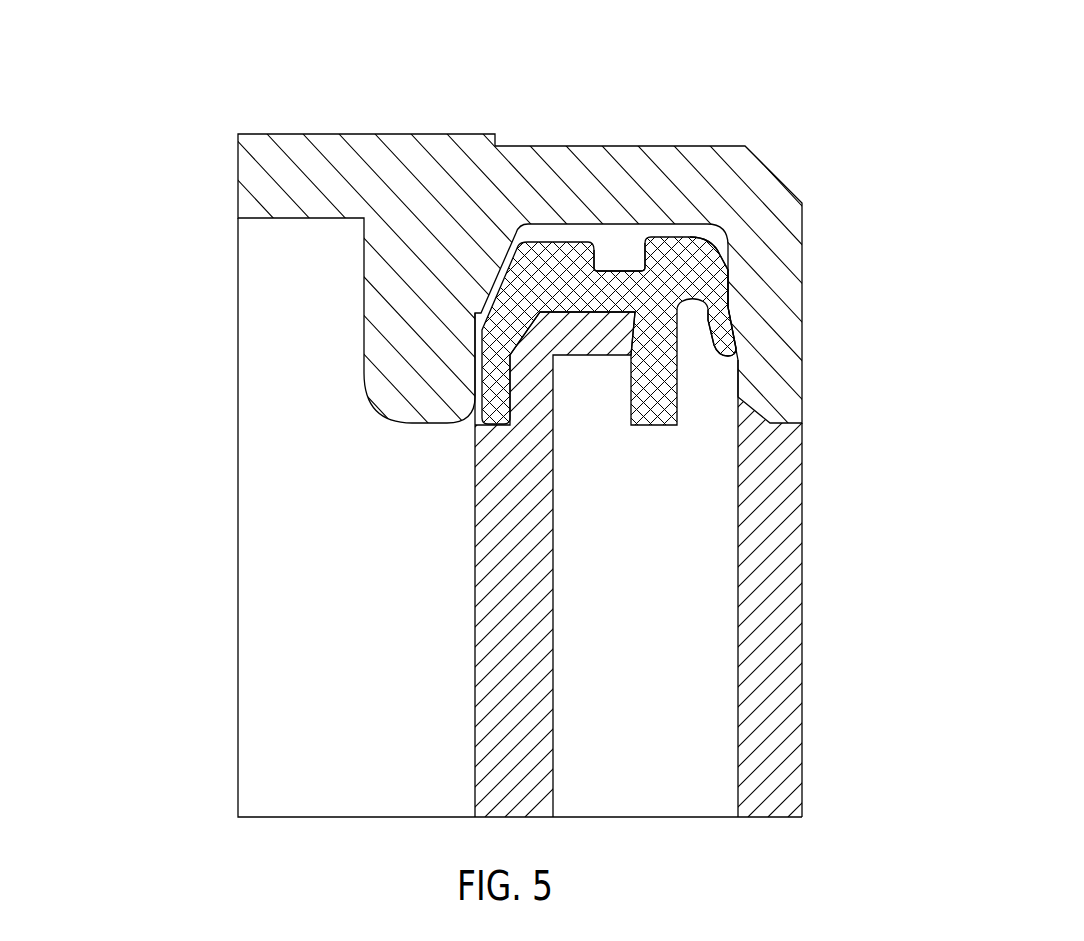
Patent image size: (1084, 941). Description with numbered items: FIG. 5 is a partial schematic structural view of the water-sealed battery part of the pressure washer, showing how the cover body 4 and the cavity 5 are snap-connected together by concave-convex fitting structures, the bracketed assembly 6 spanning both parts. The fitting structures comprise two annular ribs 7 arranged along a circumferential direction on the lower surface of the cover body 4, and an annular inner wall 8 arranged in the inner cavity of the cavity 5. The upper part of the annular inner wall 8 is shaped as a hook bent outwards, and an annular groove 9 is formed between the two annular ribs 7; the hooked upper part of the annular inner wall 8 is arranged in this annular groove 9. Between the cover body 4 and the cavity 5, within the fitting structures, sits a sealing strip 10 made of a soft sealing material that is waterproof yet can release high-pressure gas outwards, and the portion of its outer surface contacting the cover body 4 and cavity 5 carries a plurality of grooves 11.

The cover body 4 is at (312, 186).
The cavity 5 is at (763, 493).
The housing assembly 6 is at (422, 471).
The annular rib 7 is at (538, 215).
The annular inner wall 8 is at (518, 594).
The annular groove 9 is at (692, 232).
The sealing strip 10 is at (716, 246).
The grooves 11 is at (613, 272).